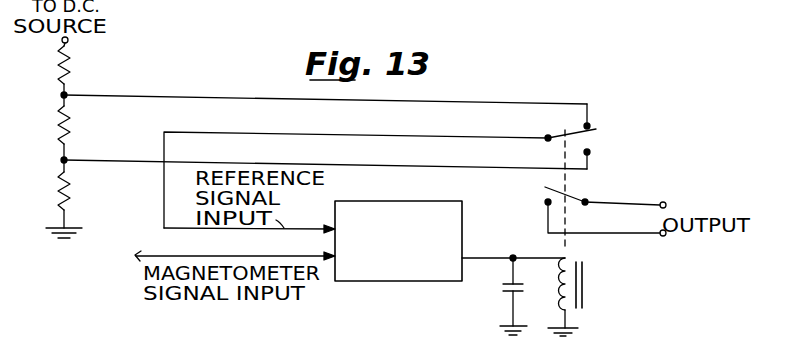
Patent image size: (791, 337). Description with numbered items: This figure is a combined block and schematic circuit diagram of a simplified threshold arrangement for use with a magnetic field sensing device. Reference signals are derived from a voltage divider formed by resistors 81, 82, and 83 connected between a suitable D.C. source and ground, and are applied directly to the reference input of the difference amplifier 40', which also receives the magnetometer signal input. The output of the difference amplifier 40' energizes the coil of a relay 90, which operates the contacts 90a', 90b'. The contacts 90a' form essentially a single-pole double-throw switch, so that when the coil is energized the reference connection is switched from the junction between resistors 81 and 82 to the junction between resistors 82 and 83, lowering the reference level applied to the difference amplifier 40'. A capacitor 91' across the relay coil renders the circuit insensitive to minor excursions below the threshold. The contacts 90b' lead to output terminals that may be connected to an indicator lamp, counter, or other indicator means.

The resistor 81 is at (70, 73).
The resistor 82 is at (69, 135).
The resistor 83 is at (69, 207).
The difference amplifier 40' is at (398, 230).
The relay 90 is at (608, 300).
The contacts 90a' is at (554, 123).
The contacts 90b' is at (605, 192).
The capacitor 91' is at (498, 296).